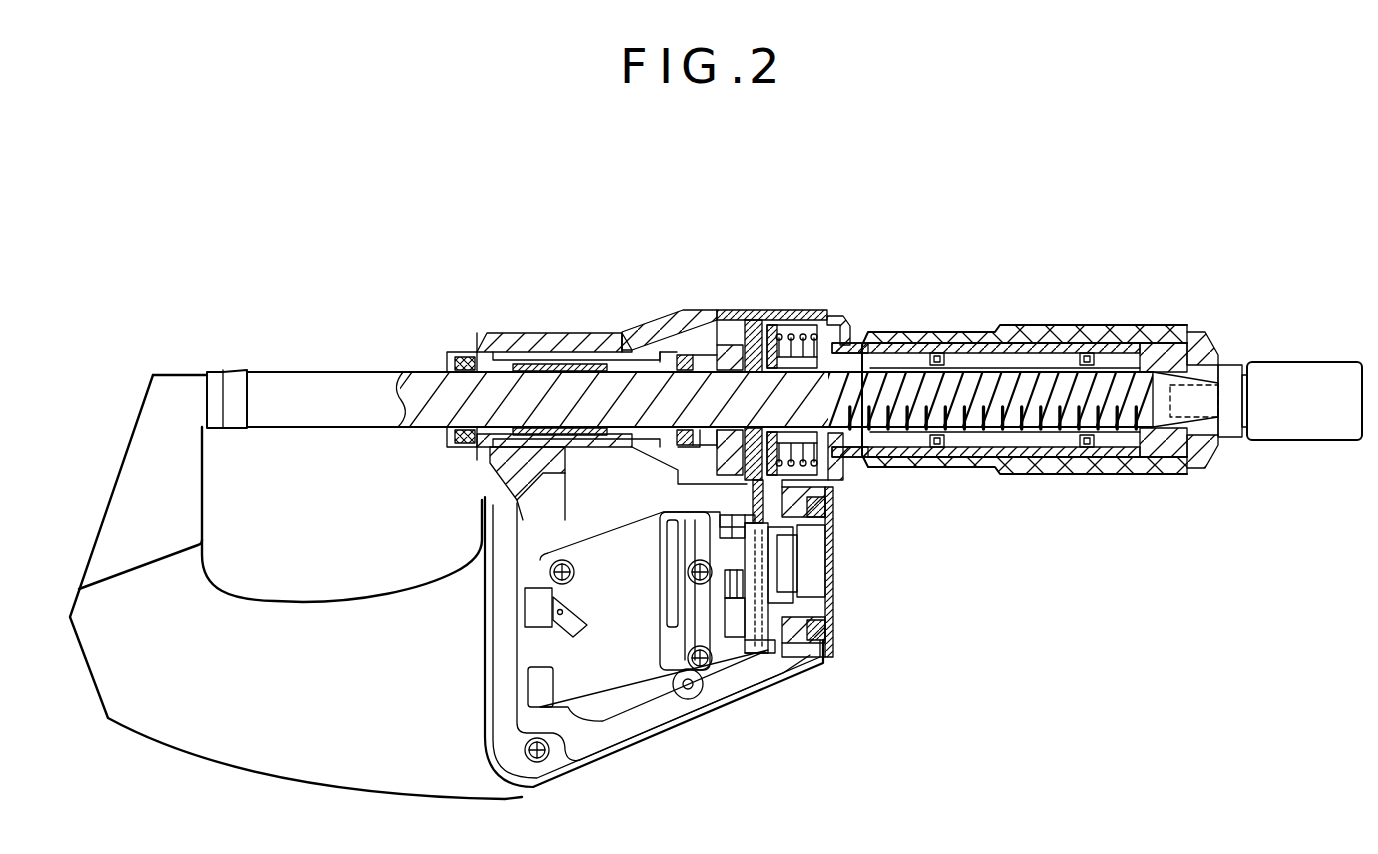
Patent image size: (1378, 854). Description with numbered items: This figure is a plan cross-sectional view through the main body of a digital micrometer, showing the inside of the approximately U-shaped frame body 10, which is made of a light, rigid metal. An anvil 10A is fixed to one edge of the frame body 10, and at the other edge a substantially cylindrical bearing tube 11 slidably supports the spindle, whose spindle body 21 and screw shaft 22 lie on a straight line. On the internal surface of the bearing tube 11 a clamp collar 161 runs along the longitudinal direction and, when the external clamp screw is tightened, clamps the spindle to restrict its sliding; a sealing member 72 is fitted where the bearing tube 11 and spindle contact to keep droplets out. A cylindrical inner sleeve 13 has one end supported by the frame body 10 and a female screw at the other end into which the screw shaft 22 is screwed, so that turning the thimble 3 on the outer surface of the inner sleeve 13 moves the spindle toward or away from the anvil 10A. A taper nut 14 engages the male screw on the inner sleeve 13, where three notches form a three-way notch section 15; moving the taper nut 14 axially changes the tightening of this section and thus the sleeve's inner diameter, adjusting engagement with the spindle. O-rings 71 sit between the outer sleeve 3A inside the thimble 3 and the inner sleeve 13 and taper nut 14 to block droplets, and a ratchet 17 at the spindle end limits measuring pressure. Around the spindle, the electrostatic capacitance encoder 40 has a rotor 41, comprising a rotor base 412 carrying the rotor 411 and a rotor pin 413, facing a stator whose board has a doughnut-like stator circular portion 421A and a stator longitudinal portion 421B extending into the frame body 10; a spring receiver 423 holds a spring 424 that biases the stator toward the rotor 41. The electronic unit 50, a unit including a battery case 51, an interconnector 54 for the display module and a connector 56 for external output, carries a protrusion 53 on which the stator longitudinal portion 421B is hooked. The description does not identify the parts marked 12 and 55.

The thimble 3 is at (1012, 328).
The outer sleeve 3A is at (846, 458).
The frame body 10 is at (517, 333).
The anvil 10A is at (216, 372).
The bearing tube 11 is at (466, 355).
The inner sleeve 12 is at (600, 364).
The inner sleeve 13 is at (882, 335).
The taper nut 14 is at (1127, 340).
The three-way notch section 15 is at (1050, 343).
The ratchet 17 is at (1275, 370).
The spindle body 21 is at (300, 372).
The screw shaft 22 is at (958, 378).
The encoder 40 is at (753, 316).
The rotor 41 is at (701, 328).
The rotor 411 is at (714, 310).
The rotor base 412 is at (635, 346).
The rotor pin 413 is at (668, 328).
The stator circular portion 421A is at (760, 322).
The stator longitudinal portion 421B is at (753, 497).
The spring receiver 423 is at (795, 330).
The spring 424 is at (838, 320).
The electronic unit 50 is at (597, 722).
The battery case 51 is at (535, 688).
The protrusion 53 is at (783, 650).
The interconnector 54 is at (663, 630).
The terminal 55 is at (737, 635).
The connector 56 is at (820, 568).
The O-rings 71 is at (938, 352).
The sealing member 72 is at (467, 448).
The clamp collar 161 is at (543, 358).